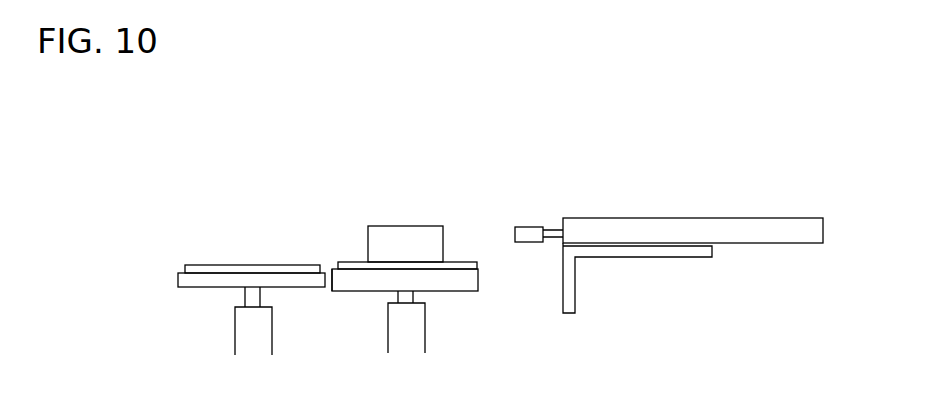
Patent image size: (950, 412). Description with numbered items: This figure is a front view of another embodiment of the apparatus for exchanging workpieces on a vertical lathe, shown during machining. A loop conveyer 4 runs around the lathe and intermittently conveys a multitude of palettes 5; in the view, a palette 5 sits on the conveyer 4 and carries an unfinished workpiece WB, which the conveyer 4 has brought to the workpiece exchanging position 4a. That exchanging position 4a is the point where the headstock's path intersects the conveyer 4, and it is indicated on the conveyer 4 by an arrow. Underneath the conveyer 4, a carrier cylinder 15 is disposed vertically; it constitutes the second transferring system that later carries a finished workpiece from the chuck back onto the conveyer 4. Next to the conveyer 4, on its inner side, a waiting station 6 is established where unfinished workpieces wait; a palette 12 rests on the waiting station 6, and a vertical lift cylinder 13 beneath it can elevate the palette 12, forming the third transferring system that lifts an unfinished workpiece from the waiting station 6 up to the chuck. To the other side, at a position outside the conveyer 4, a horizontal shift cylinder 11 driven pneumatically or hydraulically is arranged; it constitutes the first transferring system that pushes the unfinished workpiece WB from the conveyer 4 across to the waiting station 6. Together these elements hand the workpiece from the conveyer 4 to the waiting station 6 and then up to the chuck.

The conveyer 4 is at (355, 291).
The workpiece exchanging position 4a is at (350, 230).
The palette 5 is at (465, 262).
The waiting station 6 is at (178, 285).
The shift cylinder 11 is at (785, 219).
The palette 12 is at (227, 267).
The lift cylinder 13 is at (242, 333).
The carrier cylinder 15 is at (418, 330).
The unfinished workpiece WB is at (403, 230).